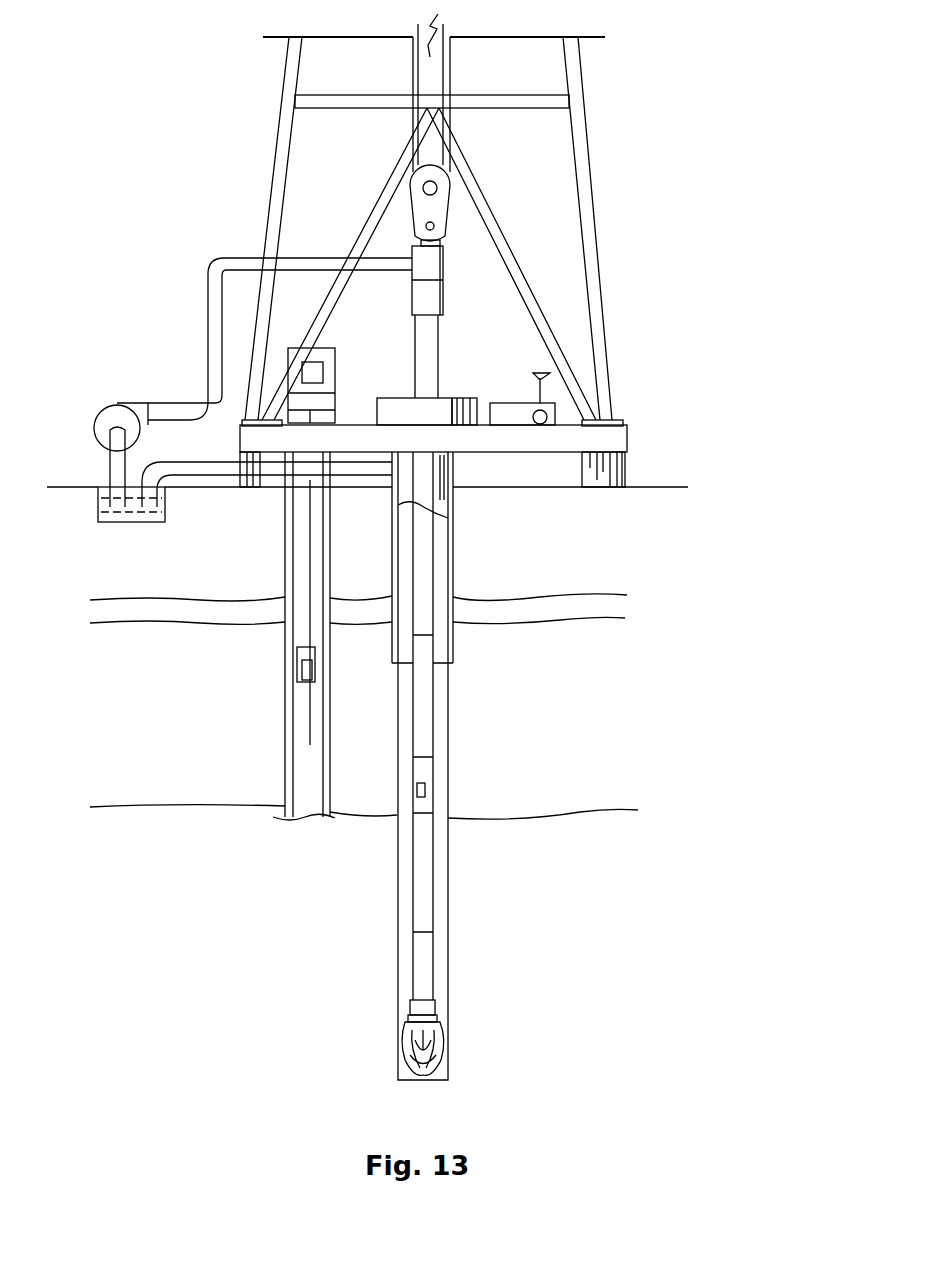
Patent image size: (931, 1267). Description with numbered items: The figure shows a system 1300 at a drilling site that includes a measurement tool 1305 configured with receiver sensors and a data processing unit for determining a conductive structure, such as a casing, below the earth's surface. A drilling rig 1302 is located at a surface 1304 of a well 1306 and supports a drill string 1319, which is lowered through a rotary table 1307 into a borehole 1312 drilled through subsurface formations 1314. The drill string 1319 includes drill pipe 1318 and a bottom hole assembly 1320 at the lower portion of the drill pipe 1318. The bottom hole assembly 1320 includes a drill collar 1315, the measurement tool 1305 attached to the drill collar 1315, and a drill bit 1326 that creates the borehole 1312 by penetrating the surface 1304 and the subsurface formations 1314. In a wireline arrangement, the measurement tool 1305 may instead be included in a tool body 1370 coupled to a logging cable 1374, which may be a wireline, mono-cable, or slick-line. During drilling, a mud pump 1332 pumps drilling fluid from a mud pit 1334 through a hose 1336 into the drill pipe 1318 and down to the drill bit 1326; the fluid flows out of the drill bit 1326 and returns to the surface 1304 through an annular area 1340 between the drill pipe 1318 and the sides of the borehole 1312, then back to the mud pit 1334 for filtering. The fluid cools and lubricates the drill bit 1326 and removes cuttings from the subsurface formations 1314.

The system 1300 is at (223, 110).
The drilling rig 1302 is at (593, 198).
The surface 1304 is at (643, 487).
The measurement tool 1305 is at (427, 790).
The well 1306 is at (460, 483).
The rotary table 1307 is at (395, 395).
The borehole 1312 is at (285, 593).
The subsurface formations 1314 is at (90, 565).
The drill collar 1315 is at (425, 770).
The drill pipe 1318 is at (433, 677).
The drill string 1319 is at (437, 545).
The bottom hole assembly 1320 is at (373, 658).
The drill bit 1326 is at (440, 1042).
The mud pump 1332 is at (125, 403).
The mud pit 1334 is at (105, 493).
The hose 1336 is at (208, 348).
The annular area 1340 is at (440, 715).
The tool body 1370 is at (295, 710).
The logging cable 1374 is at (310, 547).